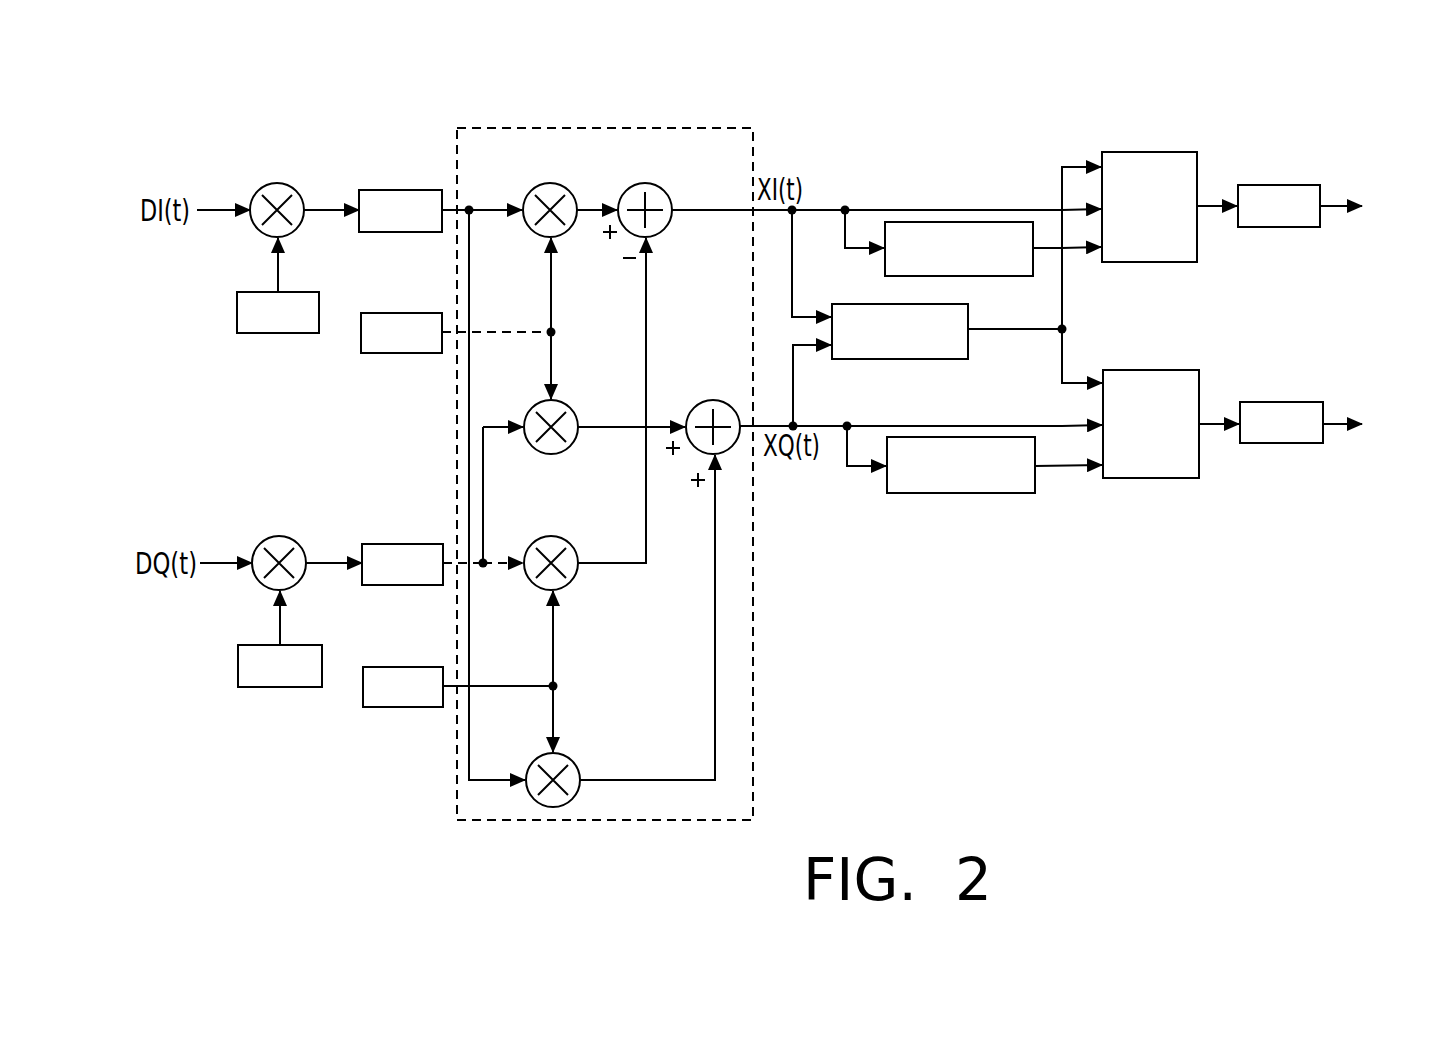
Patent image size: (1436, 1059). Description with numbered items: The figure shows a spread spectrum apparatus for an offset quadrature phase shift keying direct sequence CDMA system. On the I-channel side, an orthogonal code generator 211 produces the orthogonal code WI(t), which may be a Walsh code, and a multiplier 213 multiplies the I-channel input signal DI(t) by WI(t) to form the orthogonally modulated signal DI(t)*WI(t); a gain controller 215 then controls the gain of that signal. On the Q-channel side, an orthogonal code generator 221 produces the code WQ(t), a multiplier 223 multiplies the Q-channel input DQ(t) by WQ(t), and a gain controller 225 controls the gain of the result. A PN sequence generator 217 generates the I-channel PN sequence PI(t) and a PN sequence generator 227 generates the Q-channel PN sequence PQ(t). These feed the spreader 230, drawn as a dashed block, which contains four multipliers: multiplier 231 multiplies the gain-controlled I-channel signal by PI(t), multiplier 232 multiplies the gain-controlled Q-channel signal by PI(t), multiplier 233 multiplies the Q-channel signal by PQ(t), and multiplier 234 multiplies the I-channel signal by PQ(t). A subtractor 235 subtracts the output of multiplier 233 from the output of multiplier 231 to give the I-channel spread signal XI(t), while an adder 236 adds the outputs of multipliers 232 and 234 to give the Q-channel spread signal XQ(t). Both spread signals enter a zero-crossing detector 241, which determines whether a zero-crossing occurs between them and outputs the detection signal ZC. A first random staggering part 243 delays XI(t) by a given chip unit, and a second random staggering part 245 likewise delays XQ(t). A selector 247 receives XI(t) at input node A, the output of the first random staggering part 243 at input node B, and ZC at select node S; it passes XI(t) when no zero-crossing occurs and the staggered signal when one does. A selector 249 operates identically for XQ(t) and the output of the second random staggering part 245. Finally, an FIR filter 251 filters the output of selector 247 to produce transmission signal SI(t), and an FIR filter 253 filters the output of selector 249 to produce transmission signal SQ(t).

The orthogonal code generator 211 is at (278, 337).
The multiplier 213 is at (290, 184).
The gain controller 215 is at (397, 190).
The PN sequence generator 217 is at (397, 313).
The orthogonal code generator 221 is at (280, 689).
The multiplier 223 is at (293, 536).
The gain controller 225 is at (402, 544).
The PN sequence generator 227 is at (402, 666).
The spreader 230 is at (603, 128).
The multiplier 231 is at (563, 182).
The multiplier 232 is at (563, 401).
The multiplier 233 is at (563, 537).
The multiplier 234 is at (563, 753).
The subtractor 235 is at (660, 182).
The adder 236 is at (727, 401).
The zero-crossing detector 241 is at (900, 361).
The first random staggering part 243 is at (885, 267).
The second random staggering part 245 is at (968, 493).
The selector 247 is at (1147, 151).
The selector 249 is at (1150, 370).
The FIR filter 251 is at (1277, 185).
The FIR filter 253 is at (1280, 402).